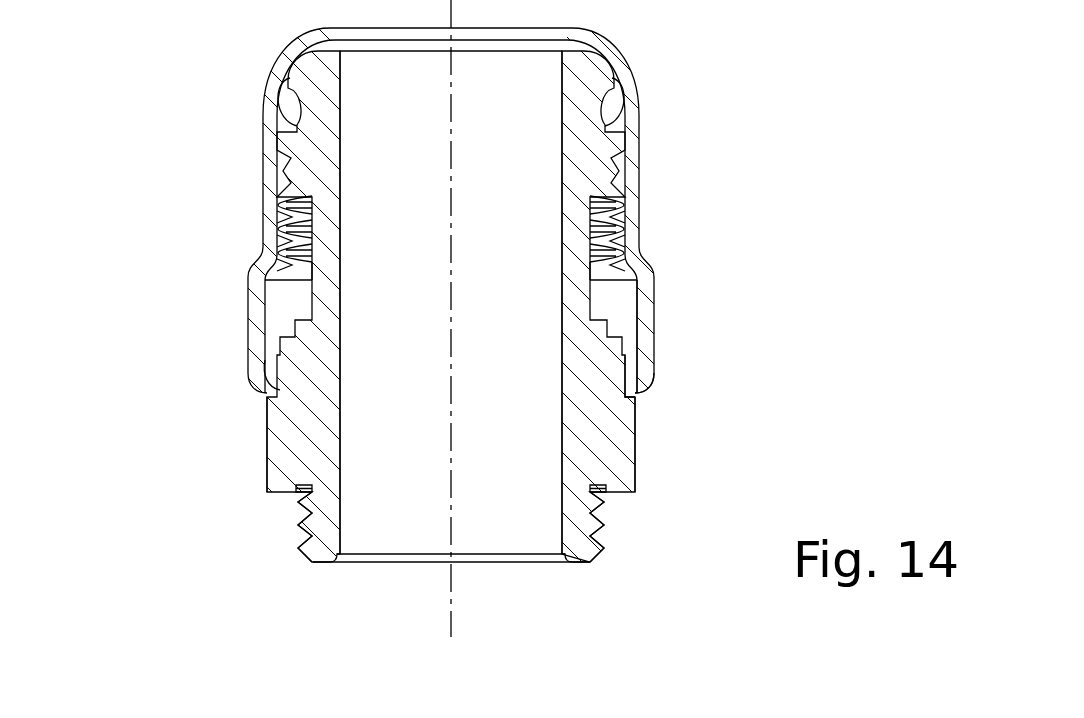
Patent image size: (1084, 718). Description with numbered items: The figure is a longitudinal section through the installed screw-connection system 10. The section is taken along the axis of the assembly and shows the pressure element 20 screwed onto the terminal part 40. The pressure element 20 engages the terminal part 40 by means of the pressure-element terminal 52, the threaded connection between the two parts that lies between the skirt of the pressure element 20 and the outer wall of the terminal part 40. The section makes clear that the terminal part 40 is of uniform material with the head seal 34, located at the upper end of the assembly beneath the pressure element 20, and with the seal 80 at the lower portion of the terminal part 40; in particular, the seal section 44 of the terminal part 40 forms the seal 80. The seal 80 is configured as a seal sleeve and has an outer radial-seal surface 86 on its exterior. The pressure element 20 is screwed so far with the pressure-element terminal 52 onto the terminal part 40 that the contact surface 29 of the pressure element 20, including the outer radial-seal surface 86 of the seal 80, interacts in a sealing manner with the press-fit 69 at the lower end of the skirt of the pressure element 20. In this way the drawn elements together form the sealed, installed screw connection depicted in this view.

The screw-connection system 10 is at (130, 155).
The pressure element 20 is at (240, 82).
The contact surface 29 is at (300, 403).
The head seal 34 is at (578, 78).
The terminal part 40 is at (650, 483).
The seal section 44 is at (618, 419).
The pressure-element terminal 52 is at (606, 214).
The press-fit 69 is at (636, 386).
The seal 80 is at (624, 447).
The outer radial-seal surface 86 is at (268, 462).